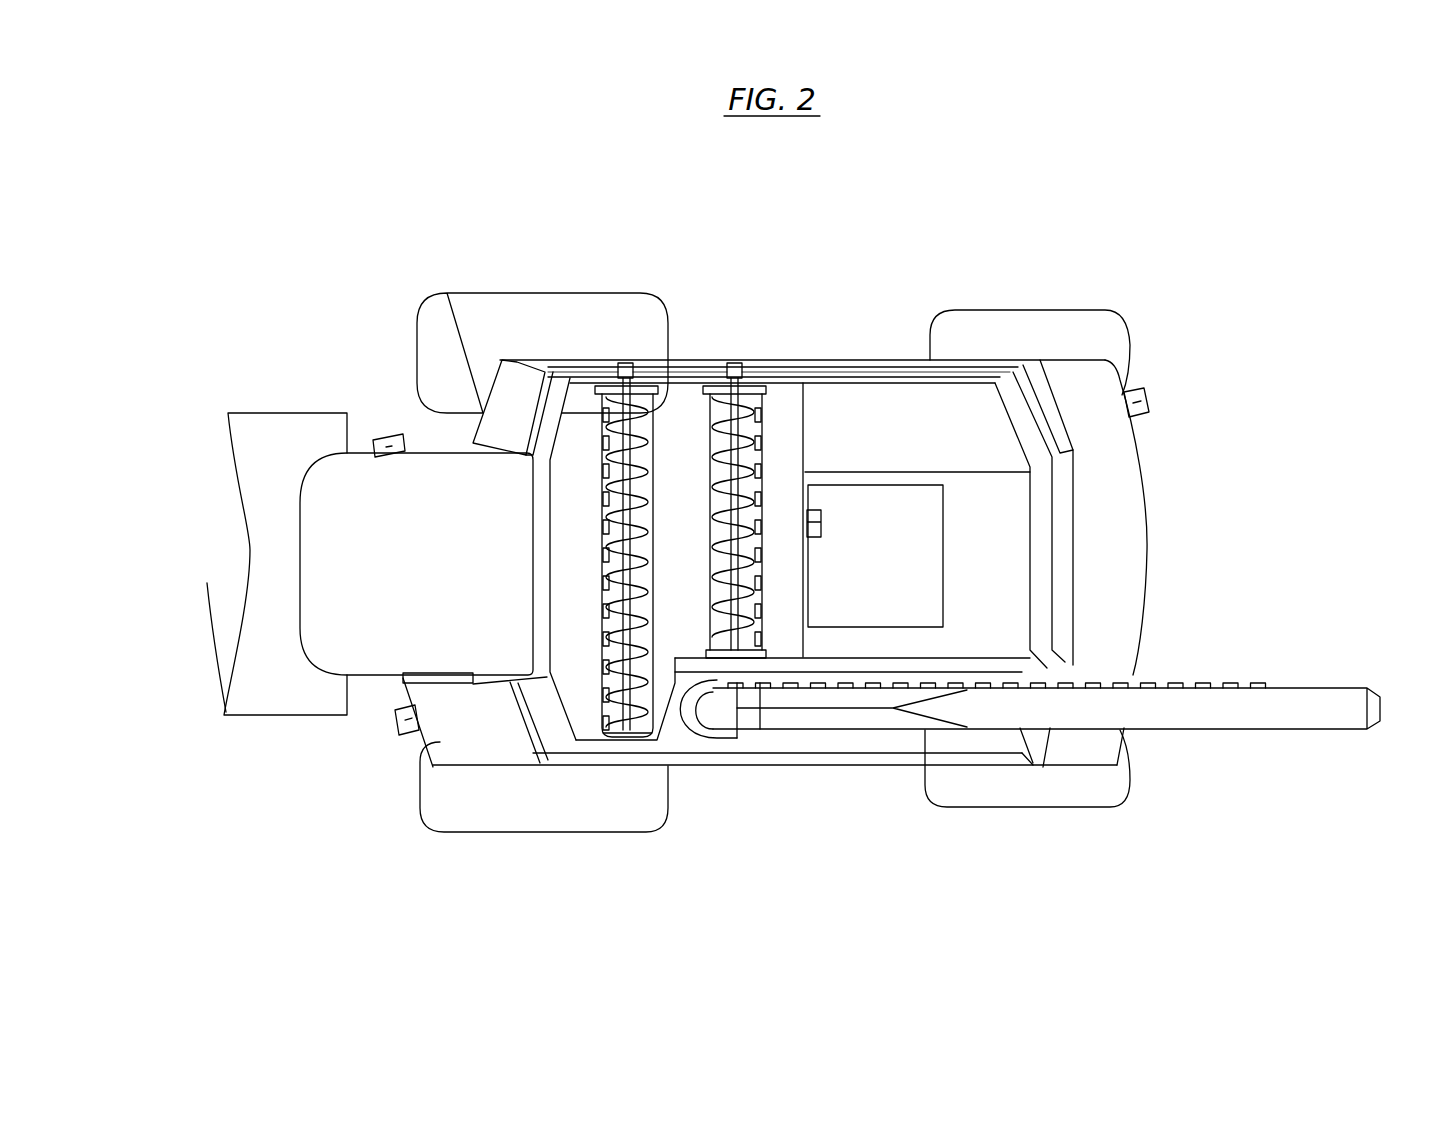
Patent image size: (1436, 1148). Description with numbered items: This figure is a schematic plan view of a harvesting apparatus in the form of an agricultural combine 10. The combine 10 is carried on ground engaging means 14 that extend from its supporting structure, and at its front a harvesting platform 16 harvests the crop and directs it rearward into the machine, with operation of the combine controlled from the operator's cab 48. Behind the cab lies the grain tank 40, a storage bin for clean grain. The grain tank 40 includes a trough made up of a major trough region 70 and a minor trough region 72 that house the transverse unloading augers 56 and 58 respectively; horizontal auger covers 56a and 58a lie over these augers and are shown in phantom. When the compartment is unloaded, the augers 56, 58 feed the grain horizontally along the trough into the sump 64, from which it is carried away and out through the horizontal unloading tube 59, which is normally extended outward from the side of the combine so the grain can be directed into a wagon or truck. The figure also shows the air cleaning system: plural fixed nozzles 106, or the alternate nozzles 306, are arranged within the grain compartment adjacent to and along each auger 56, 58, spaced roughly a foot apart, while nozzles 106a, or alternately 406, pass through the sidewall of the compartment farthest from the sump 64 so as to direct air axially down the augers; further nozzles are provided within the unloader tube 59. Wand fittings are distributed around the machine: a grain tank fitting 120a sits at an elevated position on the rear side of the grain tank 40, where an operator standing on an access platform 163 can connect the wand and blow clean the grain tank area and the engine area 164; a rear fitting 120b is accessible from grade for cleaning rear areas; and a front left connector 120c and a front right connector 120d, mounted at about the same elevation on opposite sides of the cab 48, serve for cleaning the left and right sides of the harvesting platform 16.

The agricultural combine 10 is at (990, 237).
The ground engaging means 14 is at (482, 293).
The harvesting platform 16 is at (257, 538).
The grain tank 40 is at (808, 455).
The operator's cab 48 is at (388, 640).
The transverse unloading auger 56 is at (655, 443).
The horizontal auger cover 56a is at (655, 545).
The transverse unloading auger 58 is at (790, 427).
The horizontal auger cover 58a is at (803, 435).
The horizontal unloading tube 59 is at (1243, 730).
The sump 64 is at (688, 745).
The major trough region 70 is at (587, 420).
The minor trough region 72 is at (805, 387).
The stationary nozzle 106 is at (958, 660).
The alternate nozzle 306 is at (587, 670).
The stationary nozzle 106a is at (779, 287).
The alternate nozzle 406 is at (627, 362).
The grain tank fitting 120a is at (822, 540).
The rear fitting 120b is at (1143, 400).
The front left connector 120c is at (410, 735).
The front right connector 120d is at (390, 435).
The access platform 163 is at (943, 547).
The engine area 164 is at (985, 572).